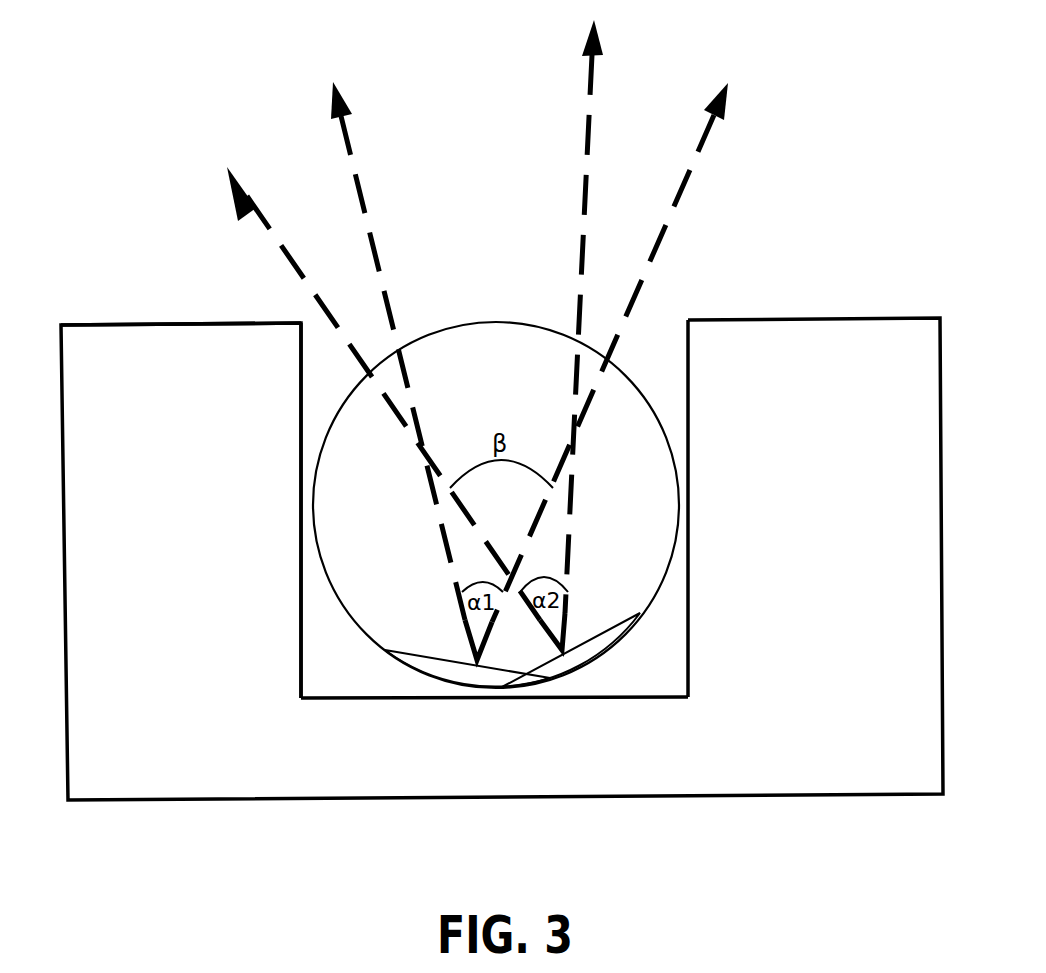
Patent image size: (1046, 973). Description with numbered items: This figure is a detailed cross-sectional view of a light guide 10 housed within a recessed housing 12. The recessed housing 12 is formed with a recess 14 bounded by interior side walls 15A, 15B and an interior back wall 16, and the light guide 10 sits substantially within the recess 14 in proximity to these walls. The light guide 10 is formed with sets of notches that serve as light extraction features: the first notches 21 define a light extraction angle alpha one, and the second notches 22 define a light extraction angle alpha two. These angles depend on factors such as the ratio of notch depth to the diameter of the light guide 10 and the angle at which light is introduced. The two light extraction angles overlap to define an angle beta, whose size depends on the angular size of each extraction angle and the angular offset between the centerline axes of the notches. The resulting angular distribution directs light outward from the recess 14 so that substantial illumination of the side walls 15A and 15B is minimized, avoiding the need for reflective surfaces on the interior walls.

The light guide 10 is at (489, 322).
The recessed housing 12 is at (780, 318).
The recess 14 is at (345, 660).
The interior side wall 15A is at (300, 522).
The interior side wall 15B is at (690, 518).
The interior back wall 16 is at (512, 698).
The first notches 21 is at (447, 662).
The second notches 22 is at (587, 642).